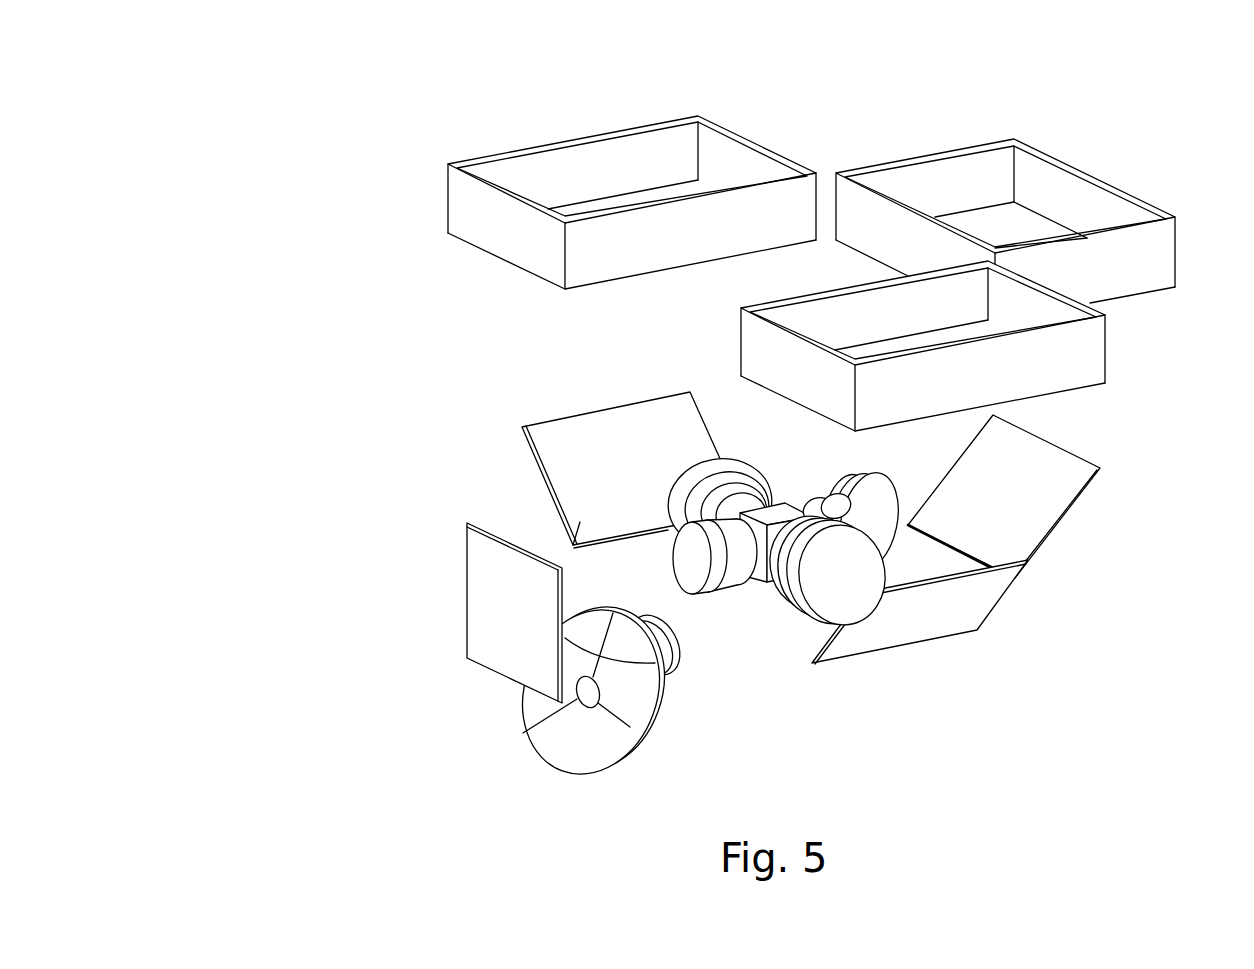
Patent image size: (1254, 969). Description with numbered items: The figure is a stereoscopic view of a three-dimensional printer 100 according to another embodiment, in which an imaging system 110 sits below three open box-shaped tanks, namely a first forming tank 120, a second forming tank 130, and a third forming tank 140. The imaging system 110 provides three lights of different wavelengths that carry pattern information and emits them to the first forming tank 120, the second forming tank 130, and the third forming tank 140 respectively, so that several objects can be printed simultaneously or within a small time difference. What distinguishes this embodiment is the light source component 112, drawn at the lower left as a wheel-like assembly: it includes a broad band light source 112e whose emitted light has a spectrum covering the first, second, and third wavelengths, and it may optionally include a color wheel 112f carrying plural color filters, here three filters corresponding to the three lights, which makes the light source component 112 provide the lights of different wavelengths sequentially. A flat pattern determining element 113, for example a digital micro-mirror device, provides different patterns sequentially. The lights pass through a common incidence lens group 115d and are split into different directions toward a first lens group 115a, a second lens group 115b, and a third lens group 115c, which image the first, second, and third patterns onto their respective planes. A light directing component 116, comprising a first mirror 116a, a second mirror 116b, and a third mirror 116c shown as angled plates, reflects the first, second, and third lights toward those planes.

The three-dimensional printer 100 is at (270, 79).
The imaging system 110 is at (436, 458).
The light source component 112 is at (592, 732).
The broad band light source 112e is at (652, 692).
The color wheel 112f is at (628, 820).
The pattern determining element 113 is at (475, 593).
The first lens group 115a is at (720, 458).
The second lens group 115b is at (873, 463).
The third lens group 115c is at (757, 563).
The common incidence lens group 115d is at (682, 575).
The light directing component 116 is at (811, 602).
The first mirror 116a is at (673, 670).
The second mirror 116b is at (1000, 533).
The third mirror 116c is at (933, 753).
The first forming tank 120 is at (460, 197).
The second forming tank 130 is at (1125, 192).
The third forming tank 140 is at (1093, 353).